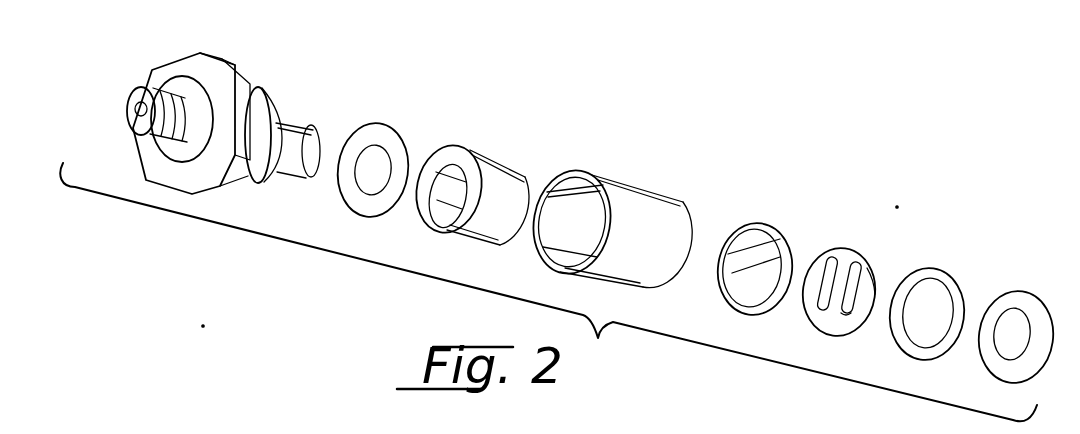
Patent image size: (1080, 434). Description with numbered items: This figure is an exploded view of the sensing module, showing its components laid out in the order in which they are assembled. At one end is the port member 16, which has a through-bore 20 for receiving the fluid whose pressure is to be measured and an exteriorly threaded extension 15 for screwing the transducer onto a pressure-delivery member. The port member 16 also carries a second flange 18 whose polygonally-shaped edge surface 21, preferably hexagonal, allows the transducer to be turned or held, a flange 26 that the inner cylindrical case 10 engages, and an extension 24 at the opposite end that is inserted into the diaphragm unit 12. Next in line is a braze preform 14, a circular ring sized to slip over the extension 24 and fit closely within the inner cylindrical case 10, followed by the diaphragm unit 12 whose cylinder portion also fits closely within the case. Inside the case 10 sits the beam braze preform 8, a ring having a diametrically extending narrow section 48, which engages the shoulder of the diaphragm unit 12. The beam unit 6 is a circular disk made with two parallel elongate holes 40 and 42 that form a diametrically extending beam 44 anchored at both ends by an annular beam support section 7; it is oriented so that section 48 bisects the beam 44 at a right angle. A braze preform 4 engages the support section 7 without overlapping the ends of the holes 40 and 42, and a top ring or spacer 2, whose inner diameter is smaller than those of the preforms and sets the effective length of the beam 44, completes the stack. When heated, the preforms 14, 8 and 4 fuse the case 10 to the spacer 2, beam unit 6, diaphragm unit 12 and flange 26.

The top ring or spacer 2 is at (1028, 293).
The braze preform 4 is at (943, 277).
The beam unit 6 is at (812, 322).
The annular beam support section 7 is at (865, 278).
The beam braze preform 8 is at (763, 229).
The inner cylindrical case 10 is at (622, 178).
The diaphragm unit 12 is at (483, 153).
The braze preform 14 is at (384, 126).
The exteriorly threaded extension 15 is at (175, 82).
The port member 16 is at (259, 65).
The second flange 18 is at (173, 173).
The through-bore 20 is at (135, 109).
The polygonally-shaped edge surface 21 is at (212, 54).
The extension 24 is at (300, 121).
The flange 26 is at (240, 188).
The elongate hole 40 is at (833, 255).
The elongate hole 42 is at (847, 315).
The beam 44 is at (845, 268).
The diametrically extending narrow section 48 is at (730, 266).